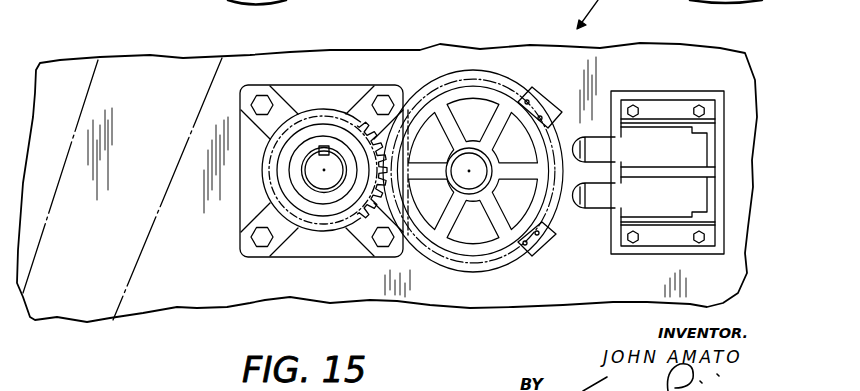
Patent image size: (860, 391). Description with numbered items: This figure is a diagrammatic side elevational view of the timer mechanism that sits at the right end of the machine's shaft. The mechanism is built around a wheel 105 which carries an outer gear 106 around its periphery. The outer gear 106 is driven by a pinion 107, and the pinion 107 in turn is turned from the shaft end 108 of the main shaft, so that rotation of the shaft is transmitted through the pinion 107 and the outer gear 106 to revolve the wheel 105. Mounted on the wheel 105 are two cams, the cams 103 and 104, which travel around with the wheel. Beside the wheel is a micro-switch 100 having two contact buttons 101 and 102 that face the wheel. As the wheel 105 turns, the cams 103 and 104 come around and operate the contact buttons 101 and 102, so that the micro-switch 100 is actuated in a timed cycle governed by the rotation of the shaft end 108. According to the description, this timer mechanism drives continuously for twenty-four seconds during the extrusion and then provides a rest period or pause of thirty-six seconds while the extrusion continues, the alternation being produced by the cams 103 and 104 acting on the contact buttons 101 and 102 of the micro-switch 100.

The micro-switch 100 is at (663, 100).
The contact button 101 is at (597, 152).
The contact button 102 is at (598, 195).
The cam 103 is at (544, 89).
The cam 104 is at (540, 247).
The wheel 105 is at (503, 233).
The outer gear 106 is at (378, 212).
The pinion 107 is at (355, 213).
The shaft end 108 is at (308, 176).